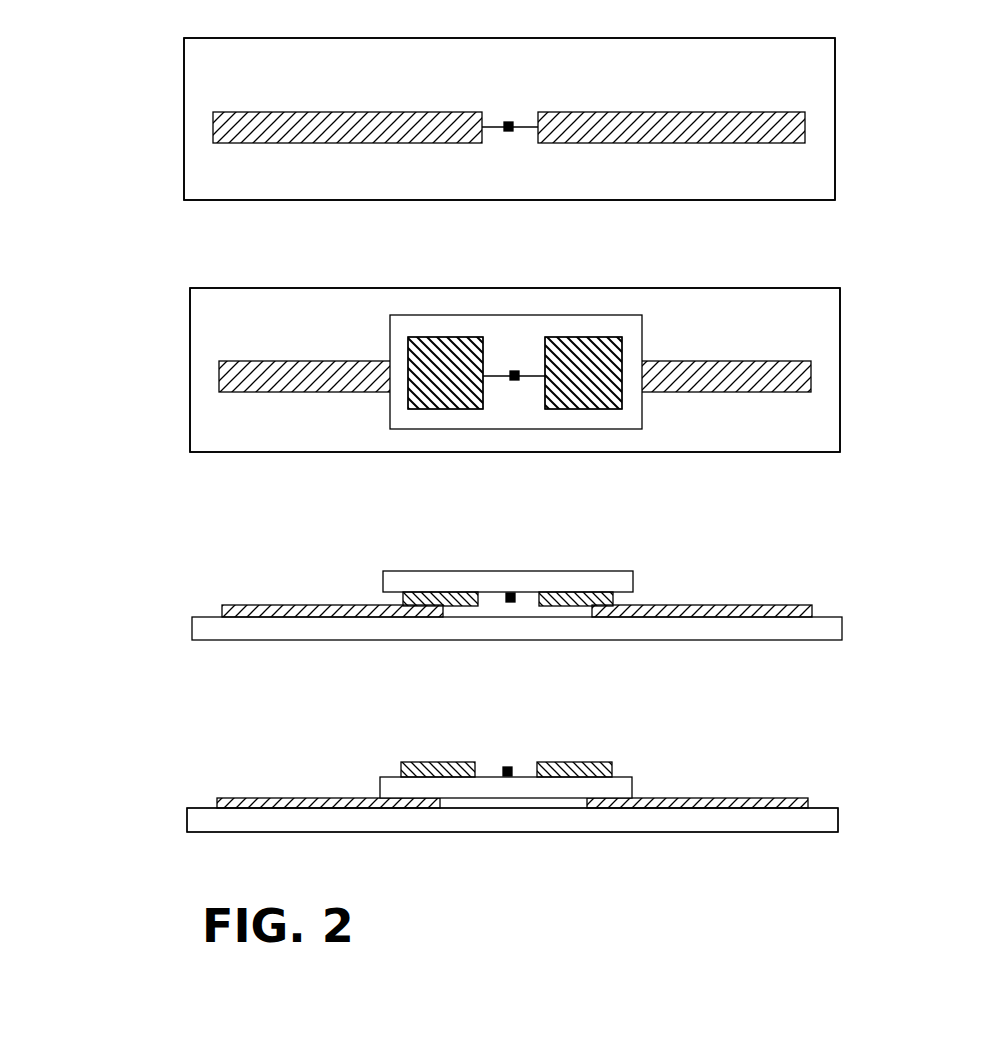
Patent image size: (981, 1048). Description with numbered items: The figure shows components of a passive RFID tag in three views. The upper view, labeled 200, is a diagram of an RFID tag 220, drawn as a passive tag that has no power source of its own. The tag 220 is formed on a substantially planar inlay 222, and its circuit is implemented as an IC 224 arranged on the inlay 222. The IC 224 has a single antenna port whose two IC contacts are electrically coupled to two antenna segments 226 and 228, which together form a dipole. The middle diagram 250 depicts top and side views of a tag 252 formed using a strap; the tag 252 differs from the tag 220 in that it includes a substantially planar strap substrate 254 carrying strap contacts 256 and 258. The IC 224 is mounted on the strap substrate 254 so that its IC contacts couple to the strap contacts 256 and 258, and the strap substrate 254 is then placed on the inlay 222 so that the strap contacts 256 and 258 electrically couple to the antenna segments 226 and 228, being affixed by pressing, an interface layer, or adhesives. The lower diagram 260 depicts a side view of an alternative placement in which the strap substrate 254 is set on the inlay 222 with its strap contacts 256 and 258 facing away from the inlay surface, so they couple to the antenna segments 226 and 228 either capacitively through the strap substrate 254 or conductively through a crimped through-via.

The circuit layout stage 200 is at (79, 28).
The RFID tag 220 is at (176, 113).
The inlay 222 is at (820, 78).
The IC 224 is at (509, 123).
The antenna segment 226 is at (377, 123).
The antenna segment 228 is at (660, 123).
The diagram 250 is at (72, 302).
The tag 252 is at (184, 457).
The strap substrate 254 is at (402, 421).
The strap contact 256 is at (452, 404).
The strap contact 258 is at (598, 406).
The diagram 260 is at (75, 789).